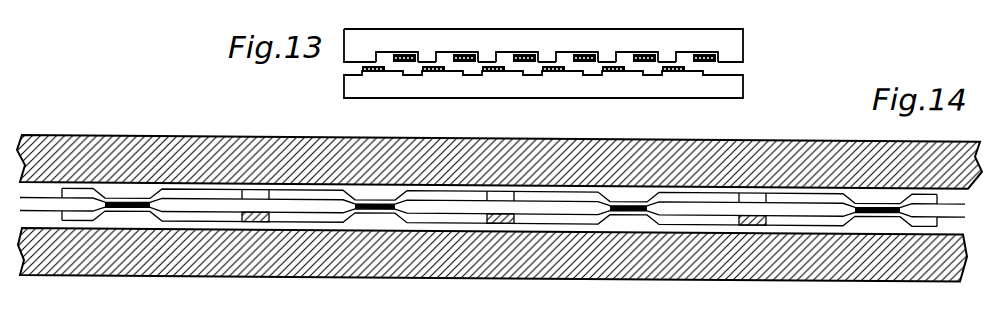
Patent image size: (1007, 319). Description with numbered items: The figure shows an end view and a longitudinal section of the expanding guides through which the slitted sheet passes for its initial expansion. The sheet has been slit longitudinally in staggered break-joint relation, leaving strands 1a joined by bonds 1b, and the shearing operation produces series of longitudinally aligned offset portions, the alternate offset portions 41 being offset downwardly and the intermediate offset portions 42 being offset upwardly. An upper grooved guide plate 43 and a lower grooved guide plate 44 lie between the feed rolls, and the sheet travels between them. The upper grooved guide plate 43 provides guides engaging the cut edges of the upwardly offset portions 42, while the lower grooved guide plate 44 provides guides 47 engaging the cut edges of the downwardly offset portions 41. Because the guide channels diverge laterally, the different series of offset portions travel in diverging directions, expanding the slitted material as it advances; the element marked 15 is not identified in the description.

In FIG. 13, the upper grooved guide plate 43 is at (744, 38).
In FIG. 14, the upper grooved guide plate 43 is at (483, 147).
In FIG. 13, the lower grooved guide plate 44 is at (744, 82).
In FIG. 13, the upwardly offset portions 42 is at (527, 53).
In FIG. 14, the upwardly offset portions 42 is at (337, 186).
In FIG. 13, the downwardly offset portions 41 is at (614, 71).
In FIG. 14, the downwardly offset portions 41 is at (443, 216).
In FIG. 13, the guides 47 is at (412, 54).
In FIG. 14, the strands 1a is at (35, 247).
In FIG. 14, the bonds 1b is at (253, 195).
In FIG. 14, the lower conductor segment 15 is at (513, 216).